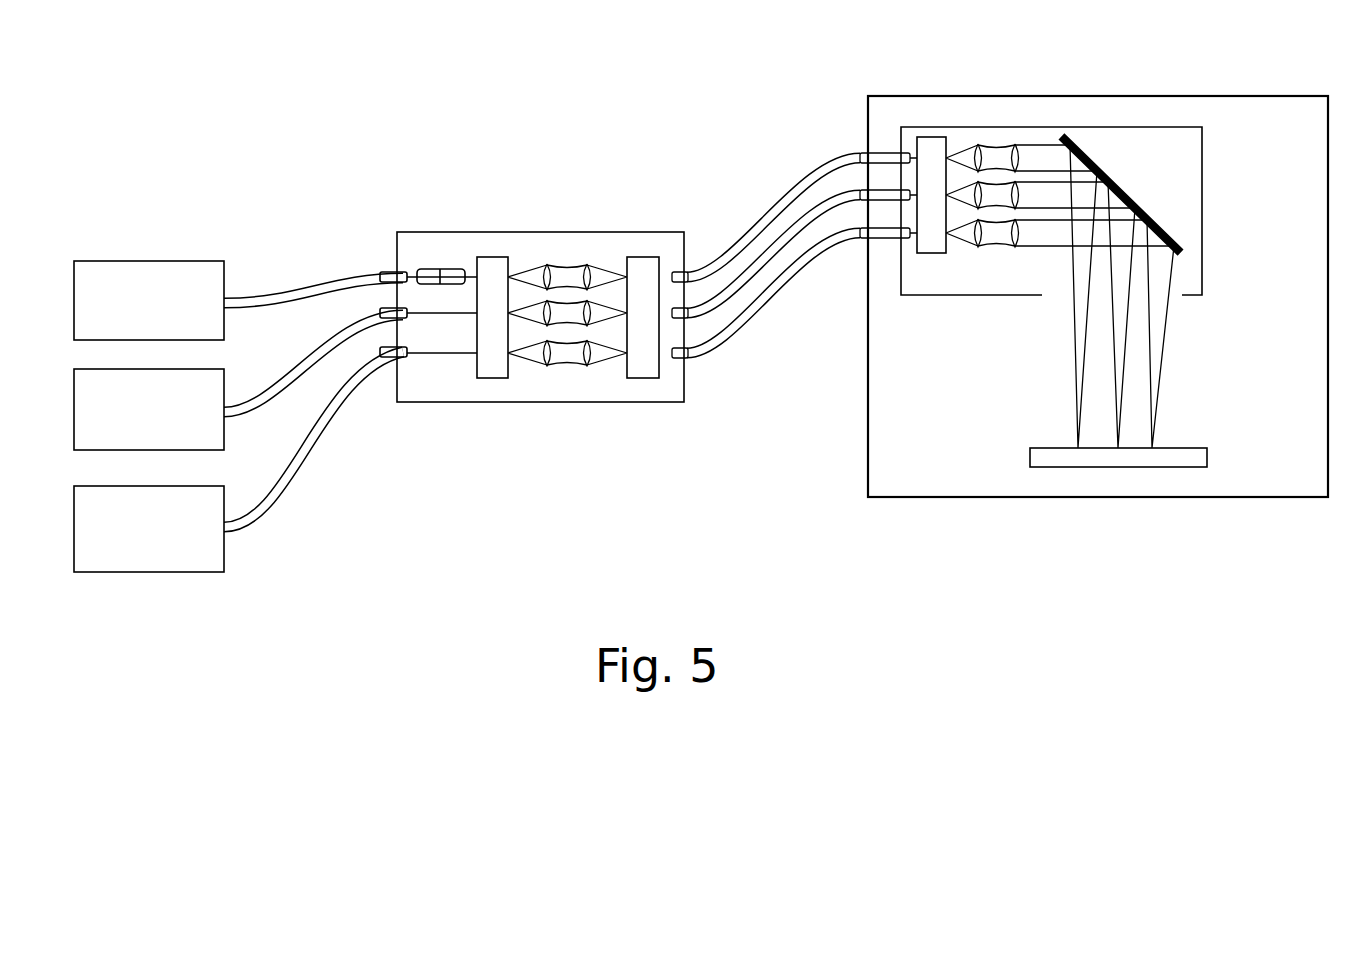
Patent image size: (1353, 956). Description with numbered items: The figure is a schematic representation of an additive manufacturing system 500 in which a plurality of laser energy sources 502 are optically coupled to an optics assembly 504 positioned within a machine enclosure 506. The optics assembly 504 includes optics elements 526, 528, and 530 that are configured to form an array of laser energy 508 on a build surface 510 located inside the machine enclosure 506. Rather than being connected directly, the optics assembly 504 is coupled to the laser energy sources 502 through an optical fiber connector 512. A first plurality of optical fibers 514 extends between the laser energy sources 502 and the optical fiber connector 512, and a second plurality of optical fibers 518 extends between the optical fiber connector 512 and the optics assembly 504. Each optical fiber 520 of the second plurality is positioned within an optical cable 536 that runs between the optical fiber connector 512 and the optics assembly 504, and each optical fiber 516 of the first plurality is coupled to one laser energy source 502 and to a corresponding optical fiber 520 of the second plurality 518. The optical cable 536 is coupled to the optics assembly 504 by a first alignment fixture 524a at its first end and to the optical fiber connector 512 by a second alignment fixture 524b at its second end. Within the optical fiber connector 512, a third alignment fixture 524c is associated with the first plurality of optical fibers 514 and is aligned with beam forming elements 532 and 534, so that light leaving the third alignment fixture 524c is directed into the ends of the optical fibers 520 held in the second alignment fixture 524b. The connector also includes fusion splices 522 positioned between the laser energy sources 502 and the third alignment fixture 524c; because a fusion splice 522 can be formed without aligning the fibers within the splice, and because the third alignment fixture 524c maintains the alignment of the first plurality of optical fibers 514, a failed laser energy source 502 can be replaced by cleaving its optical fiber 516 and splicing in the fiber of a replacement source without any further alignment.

The additive manufacturing system 500 is at (328, 182).
The laser energy source 502 is at (122, 320).
The optics assembly 504 is at (1074, 209).
The machine enclosure 506 is at (1228, 96).
The array of laser energy 508 is at (1175, 368).
The build surface 510 is at (1178, 448).
The optical fiber connector 512 is at (554, 319).
The first plurality of optical fibers 514 is at (348, 430).
The optical fiber 516 is at (313, 391).
The second plurality of optical fibers 518 is at (811, 407).
The optical fiber 520 is at (791, 297).
The fusion splice 522 is at (437, 269).
The first alignment fixture 524a is at (928, 254).
The second alignment fixture 524b is at (652, 379).
The third alignment fixture 524c is at (493, 379).
The optics element 526 is at (975, 254).
The optics element 528 is at (1012, 254).
The optics element 530 is at (1130, 191).
The beam forming element 532 is at (547, 367).
The beam forming element 534 is at (586, 367).
The optical cable 536 is at (752, 212).